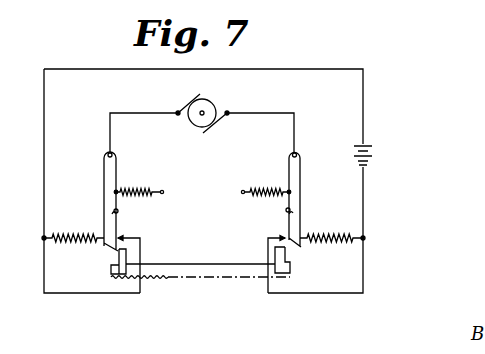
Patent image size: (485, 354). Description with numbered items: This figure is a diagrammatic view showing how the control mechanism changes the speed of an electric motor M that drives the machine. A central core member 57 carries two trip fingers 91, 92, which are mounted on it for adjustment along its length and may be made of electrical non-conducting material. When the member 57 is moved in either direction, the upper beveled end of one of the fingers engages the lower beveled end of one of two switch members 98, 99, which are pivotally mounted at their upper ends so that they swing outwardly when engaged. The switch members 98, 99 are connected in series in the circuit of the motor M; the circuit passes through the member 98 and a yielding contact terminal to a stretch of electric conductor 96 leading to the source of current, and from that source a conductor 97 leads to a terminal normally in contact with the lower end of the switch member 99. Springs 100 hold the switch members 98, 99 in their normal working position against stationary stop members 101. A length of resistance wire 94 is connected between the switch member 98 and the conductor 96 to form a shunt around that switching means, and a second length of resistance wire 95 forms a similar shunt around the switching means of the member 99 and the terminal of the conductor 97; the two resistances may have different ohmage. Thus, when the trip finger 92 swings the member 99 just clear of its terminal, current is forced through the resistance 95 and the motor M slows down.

The central core member 57 is at (202, 270).
The trip finger 91 is at (283, 256).
The trip finger 92 is at (118, 250).
The resistance wire 94 is at (327, 247).
The resistance wire 95 is at (81, 249).
The electric conductor 96 is at (267, 246).
The conductor 97 is at (152, 241).
The switch member 98 is at (299, 170).
The switch member 99 is at (107, 172).
The springs 100 is at (255, 187).
The stationary stop members 101 is at (284, 211).
The electric motor M is at (215, 105).